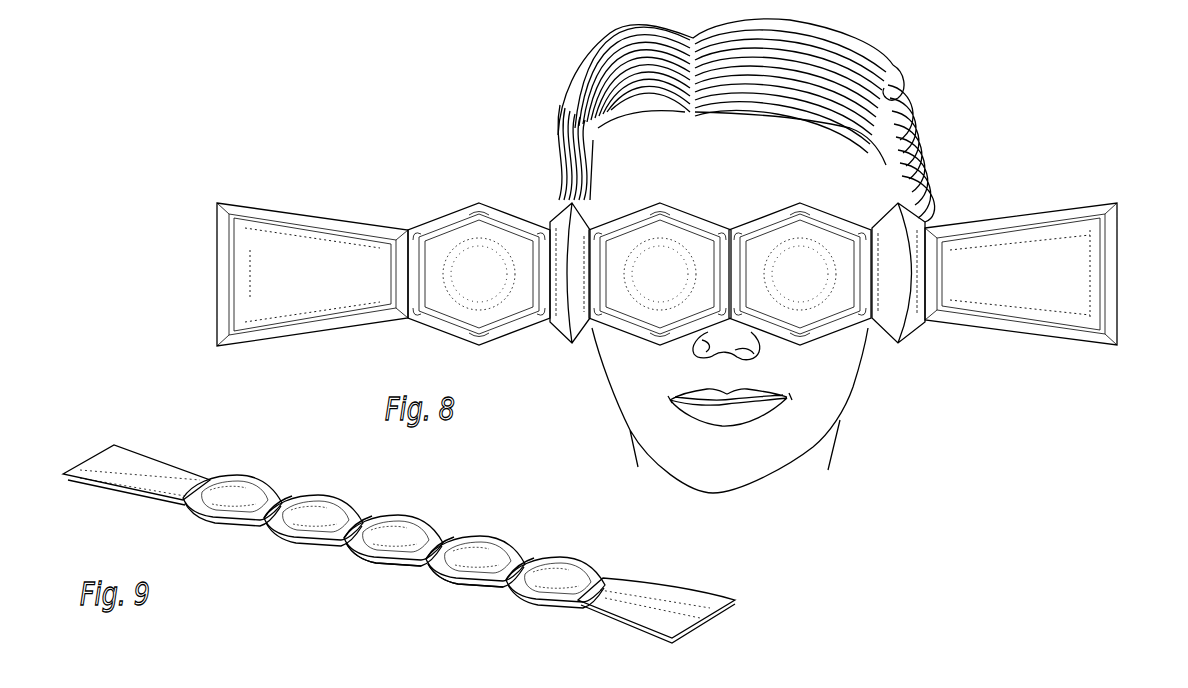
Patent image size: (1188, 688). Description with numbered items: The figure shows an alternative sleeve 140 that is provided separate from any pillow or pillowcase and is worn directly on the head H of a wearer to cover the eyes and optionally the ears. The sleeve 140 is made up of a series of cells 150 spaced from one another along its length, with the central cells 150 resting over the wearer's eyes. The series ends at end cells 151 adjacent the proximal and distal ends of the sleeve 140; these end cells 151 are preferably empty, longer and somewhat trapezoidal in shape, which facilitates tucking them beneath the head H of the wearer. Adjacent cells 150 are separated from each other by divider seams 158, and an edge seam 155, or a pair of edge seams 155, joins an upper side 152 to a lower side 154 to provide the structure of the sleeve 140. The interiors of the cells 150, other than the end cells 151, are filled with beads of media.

In FIG. 8, the head H is at (667, 179).
In FIG. 8, the sleeve 140 is at (1000, 220).
In FIG. 9, the sleeve 140 is at (298, 562).
In FIG. 8, the cells 150 is at (555, 287).
In FIG. 9, the cells 150 is at (253, 485).
In FIG. 8, the end cells 151 is at (341, 274).
In FIG. 9, the end cells 151 is at (129, 487).
In FIG. 9, the upper side 152 is at (487, 545).
In FIG. 9, the lower side 154 is at (468, 580).
In FIG. 9, the edge seam 155 is at (387, 555).
In FIG. 9, the divider seams 158 is at (267, 499).